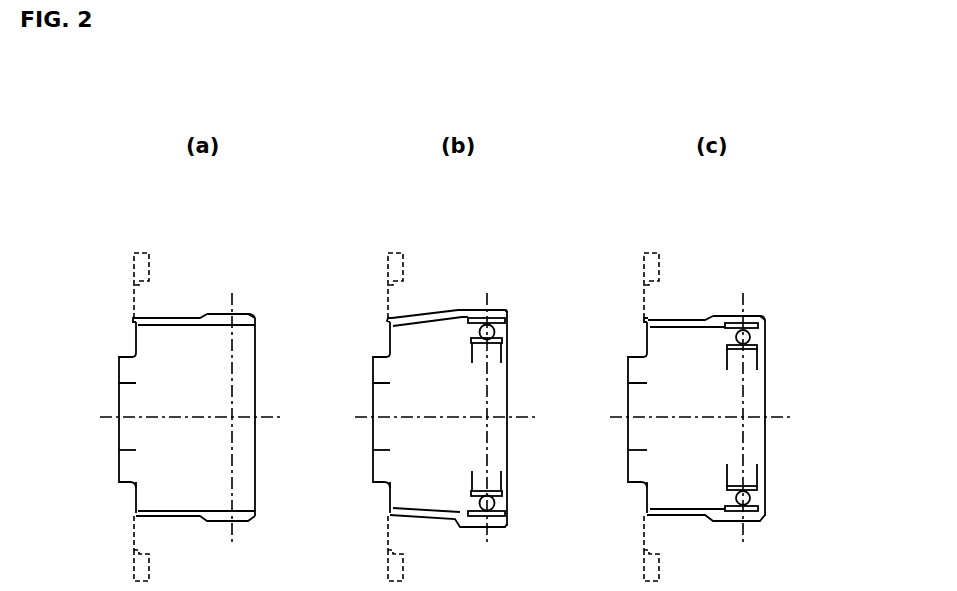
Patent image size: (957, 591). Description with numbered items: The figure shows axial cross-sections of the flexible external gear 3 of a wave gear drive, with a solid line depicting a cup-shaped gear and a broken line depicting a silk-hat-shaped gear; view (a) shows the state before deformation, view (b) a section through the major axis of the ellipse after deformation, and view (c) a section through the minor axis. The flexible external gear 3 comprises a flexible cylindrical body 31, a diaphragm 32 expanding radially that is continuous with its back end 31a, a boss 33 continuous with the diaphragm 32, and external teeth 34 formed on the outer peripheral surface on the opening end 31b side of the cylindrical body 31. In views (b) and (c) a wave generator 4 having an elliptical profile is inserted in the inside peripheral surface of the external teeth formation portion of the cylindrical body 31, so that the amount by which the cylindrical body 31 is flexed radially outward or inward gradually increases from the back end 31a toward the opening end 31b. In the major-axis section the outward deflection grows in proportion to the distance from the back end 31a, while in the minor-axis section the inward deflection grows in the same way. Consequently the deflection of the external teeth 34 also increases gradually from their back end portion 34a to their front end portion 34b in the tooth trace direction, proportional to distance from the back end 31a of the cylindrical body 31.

The flexible external gear 3 is at (174, 288).
The flexible cylindrical body 31 is at (195, 327).
The back end 31a is at (134, 318).
The opening end 31b is at (257, 318).
The diaphragm 32 is at (106, 323).
The boss 33 is at (106, 354).
The external teeth 34 is at (241, 314).
The back end portion 34a is at (199, 316).
The front end portion 34b is at (251, 314).
The wave generator 4 is at (498, 352).